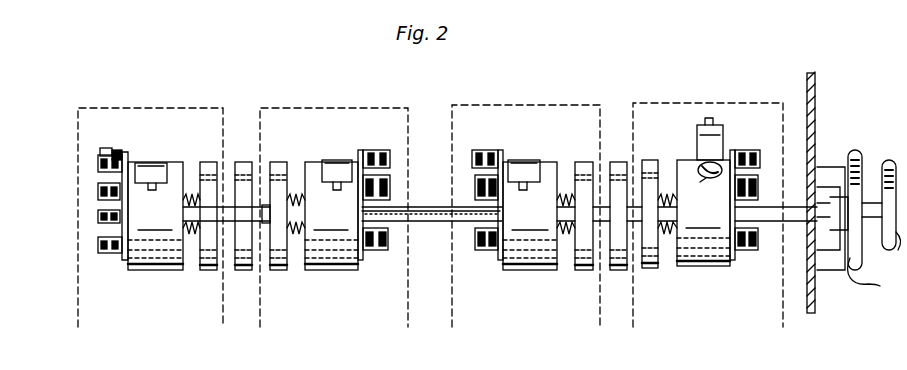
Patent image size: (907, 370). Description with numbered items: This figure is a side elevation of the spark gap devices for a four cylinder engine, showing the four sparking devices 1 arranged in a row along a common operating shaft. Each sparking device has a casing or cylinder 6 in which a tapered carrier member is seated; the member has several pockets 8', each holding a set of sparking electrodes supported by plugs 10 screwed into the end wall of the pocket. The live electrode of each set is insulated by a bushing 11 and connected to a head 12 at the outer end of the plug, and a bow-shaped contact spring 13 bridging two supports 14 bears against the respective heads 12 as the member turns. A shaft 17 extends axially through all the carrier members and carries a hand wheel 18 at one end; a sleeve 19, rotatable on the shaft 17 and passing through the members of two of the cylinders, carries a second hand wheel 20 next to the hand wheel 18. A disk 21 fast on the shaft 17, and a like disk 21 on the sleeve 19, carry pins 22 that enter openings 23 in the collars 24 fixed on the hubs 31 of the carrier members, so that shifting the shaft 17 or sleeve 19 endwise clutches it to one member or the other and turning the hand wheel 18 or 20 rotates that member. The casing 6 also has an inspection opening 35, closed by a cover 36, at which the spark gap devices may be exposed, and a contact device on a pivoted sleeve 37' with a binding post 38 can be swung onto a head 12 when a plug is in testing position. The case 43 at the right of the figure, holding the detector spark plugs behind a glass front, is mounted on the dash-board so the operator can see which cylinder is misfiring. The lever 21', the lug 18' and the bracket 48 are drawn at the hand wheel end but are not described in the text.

The unit 1 is at (84, 108).
The casing or cylinder 6 is at (429, 215).
The recesses or pockets 8' is at (696, 189).
The plugs 10 is at (122, 258).
The sleeve or bushing 11 is at (372, 251).
The head or contact 12 is at (98, 188).
The contact spring 13 is at (392, 200).
The supports 14 is at (98, 250).
The shaft 17 is at (420, 222).
The hand wheel 18 is at (894, 190).
The knob lug 18' is at (888, 252).
The sleeve 19 is at (651, 269).
The hand wheel 20 is at (852, 150).
The disk 21 is at (432, 230).
The lever 21' is at (872, 281).
The pins 22 is at (266, 205).
The sockets or openings 23 is at (298, 195).
The disk or collar 24 is at (208, 271).
The hub or extension 31 is at (297, 235).
The opening 35 is at (700, 168).
The cover 36 is at (158, 162).
The pivoted sleeve 37' is at (117, 139).
The binding post 38 is at (122, 158).
The case 43 is at (830, 271).
The bearing bracket 48 is at (824, 168).